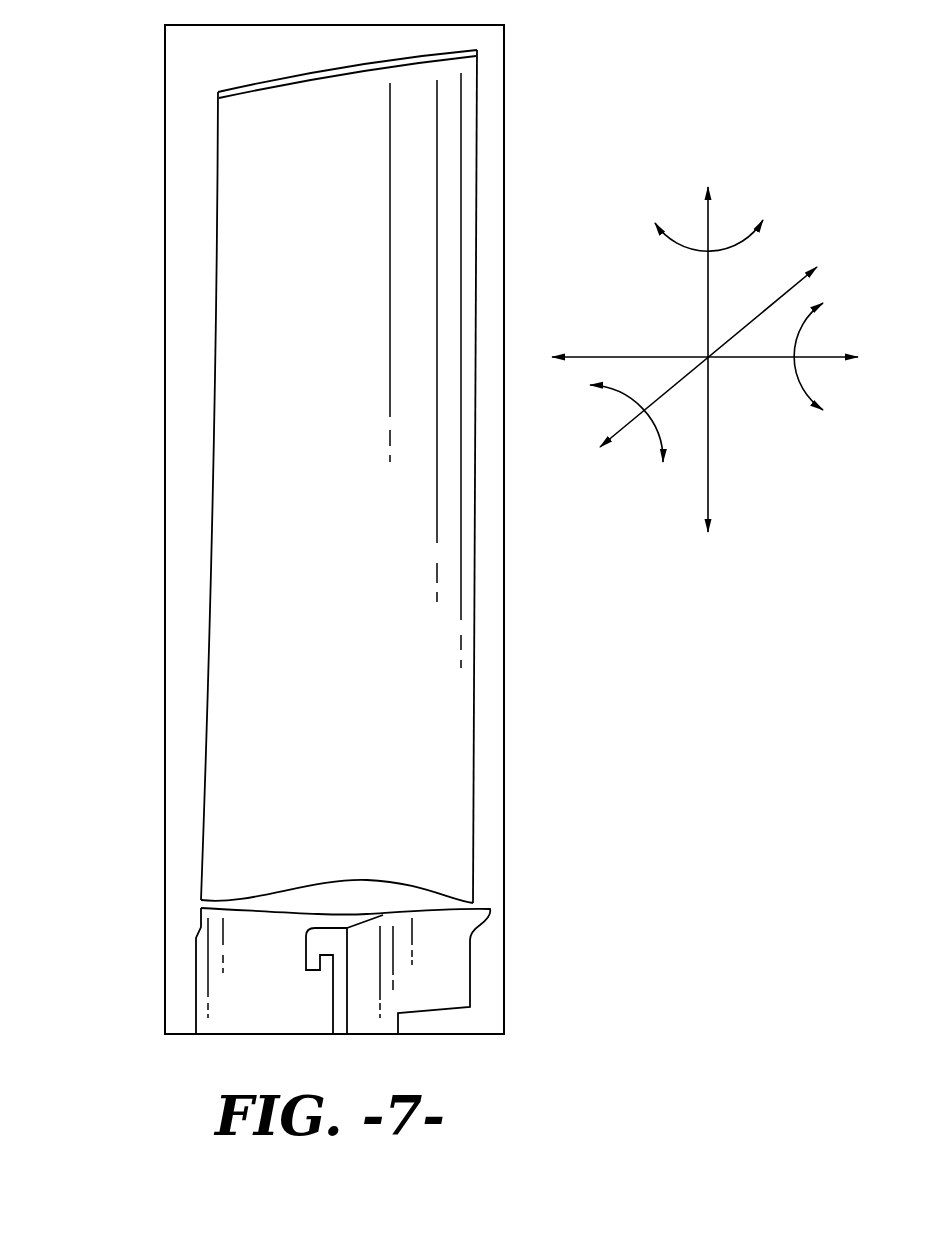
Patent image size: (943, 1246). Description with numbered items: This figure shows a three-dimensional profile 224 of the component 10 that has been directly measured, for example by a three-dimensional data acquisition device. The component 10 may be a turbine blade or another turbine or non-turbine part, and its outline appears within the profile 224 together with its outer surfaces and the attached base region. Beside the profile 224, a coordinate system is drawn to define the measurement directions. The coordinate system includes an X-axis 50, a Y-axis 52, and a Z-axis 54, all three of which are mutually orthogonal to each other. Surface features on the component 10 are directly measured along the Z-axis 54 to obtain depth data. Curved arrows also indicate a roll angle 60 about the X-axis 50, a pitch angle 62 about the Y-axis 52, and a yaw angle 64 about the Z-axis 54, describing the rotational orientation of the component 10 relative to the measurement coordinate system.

The three-dimensional profile 224 is at (127, 145).
The component 10 is at (257, 505).
The X-axis 50 is at (767, 359).
The Y-axis 52 is at (707, 280).
The Z-axis 54 is at (760, 313).
The roll angle 60 is at (797, 385).
The pitch angle 62 is at (683, 248).
The yaw angle 64 is at (665, 427).